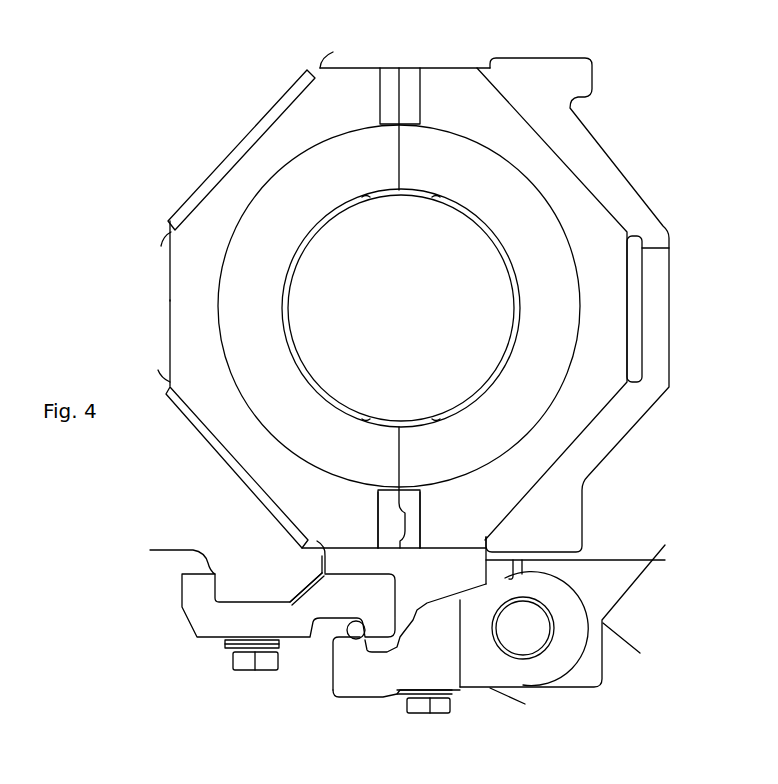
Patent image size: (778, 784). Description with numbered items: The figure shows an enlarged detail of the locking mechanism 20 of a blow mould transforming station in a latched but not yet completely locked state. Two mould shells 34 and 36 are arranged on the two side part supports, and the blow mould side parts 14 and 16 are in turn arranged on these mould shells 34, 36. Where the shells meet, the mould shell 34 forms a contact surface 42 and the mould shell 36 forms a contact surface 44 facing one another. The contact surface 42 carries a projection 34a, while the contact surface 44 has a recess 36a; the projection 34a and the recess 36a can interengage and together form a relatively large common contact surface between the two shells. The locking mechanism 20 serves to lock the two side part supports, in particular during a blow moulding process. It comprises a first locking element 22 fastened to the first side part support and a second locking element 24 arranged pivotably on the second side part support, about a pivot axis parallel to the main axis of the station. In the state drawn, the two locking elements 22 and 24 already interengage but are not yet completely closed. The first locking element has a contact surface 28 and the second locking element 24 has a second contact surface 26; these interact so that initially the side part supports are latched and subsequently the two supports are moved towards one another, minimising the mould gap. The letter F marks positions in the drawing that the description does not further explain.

The blow mould side part 14 is at (267, 290).
The blow mould side part 16 is at (548, 303).
The locking mechanism 20 is at (405, 165).
The first locking element 22 is at (310, 617).
The second locking element 24 is at (382, 683).
The second contact surface 26 is at (357, 620).
The contact surface 28 is at (357, 620).
The mould shell 34 is at (190, 342).
The projection 34a is at (398, 517).
The mould shell 36 is at (608, 342).
The recess 36a is at (408, 524).
The contact surface 42 is at (409, 455).
The contact surface 44 is at (405, 531).
The flat surface F is at (407, 203).